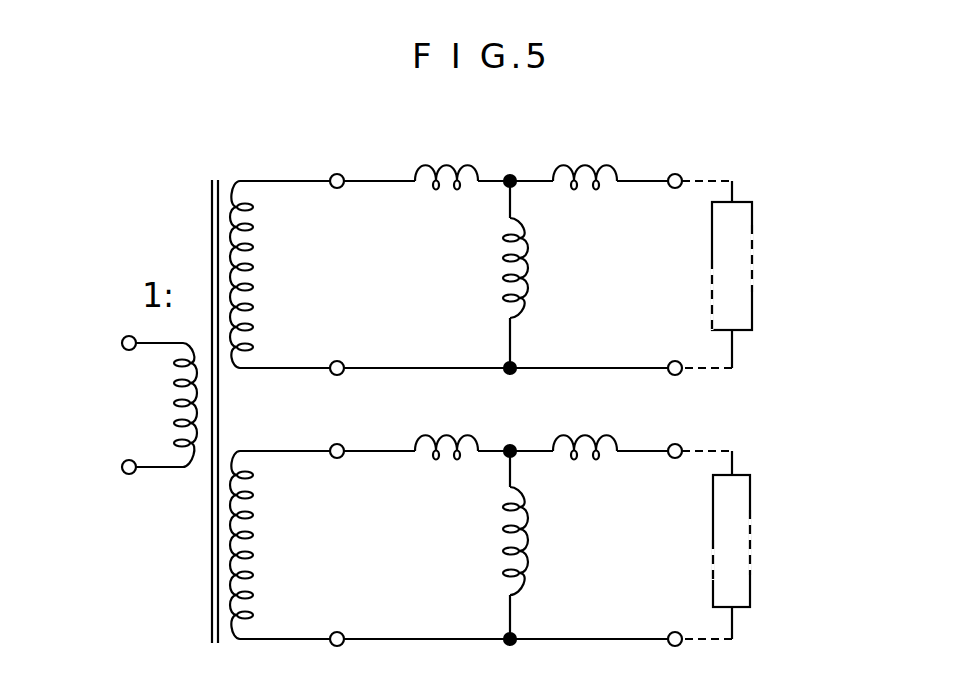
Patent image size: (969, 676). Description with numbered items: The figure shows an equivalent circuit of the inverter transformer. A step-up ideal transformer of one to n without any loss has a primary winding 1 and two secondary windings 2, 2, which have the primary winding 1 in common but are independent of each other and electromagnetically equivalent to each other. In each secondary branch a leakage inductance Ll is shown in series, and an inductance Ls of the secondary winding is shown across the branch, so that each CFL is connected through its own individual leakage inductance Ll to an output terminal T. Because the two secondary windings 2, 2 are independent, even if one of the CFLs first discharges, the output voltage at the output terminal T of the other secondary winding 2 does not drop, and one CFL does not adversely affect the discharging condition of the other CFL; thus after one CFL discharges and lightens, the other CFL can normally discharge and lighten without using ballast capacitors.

The primary winding 1 is at (123, 322).
The secondary winding 2 is at (762, 352).
The turns ratio of step-up ideal transformer n is at (239, 389).
The leakage inductance Ll is at (516, 312).
The inductance of secondary winding Ls is at (490, 406).
The output terminal T is at (687, 391).
The cold cathode fluorescent lamp CFL is at (762, 410).